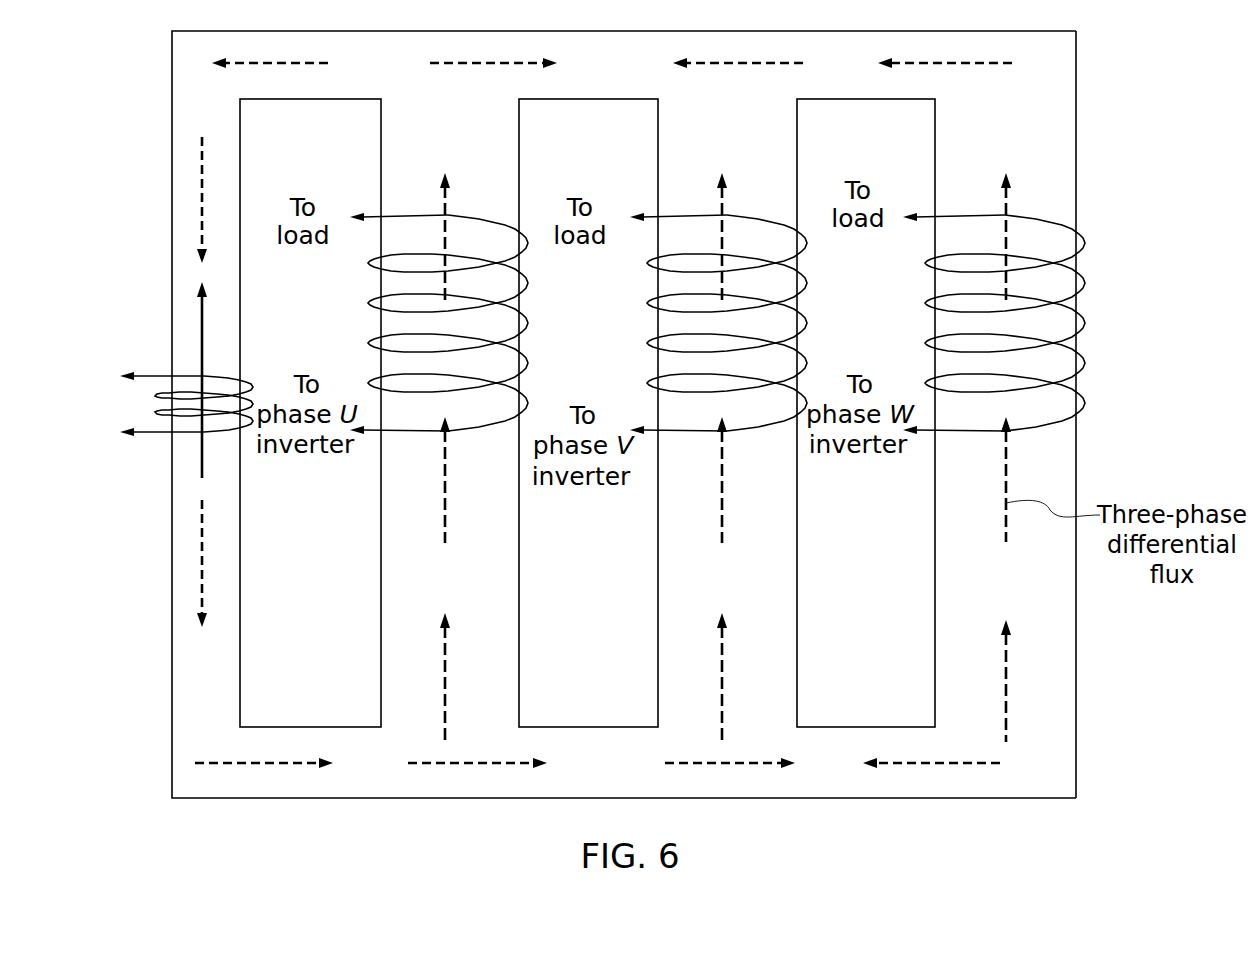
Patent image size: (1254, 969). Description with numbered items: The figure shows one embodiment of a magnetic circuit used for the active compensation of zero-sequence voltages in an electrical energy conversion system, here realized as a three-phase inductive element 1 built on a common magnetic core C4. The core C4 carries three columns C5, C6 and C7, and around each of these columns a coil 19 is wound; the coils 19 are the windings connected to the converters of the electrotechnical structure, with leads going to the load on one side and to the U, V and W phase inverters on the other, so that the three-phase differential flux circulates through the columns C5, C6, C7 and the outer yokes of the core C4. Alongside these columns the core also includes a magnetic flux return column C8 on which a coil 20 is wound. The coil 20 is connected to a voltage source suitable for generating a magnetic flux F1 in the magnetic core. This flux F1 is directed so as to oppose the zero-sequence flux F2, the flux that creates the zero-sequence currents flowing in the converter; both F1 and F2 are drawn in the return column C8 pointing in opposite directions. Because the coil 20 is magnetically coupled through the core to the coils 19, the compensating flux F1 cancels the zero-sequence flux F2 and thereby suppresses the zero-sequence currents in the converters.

The core (outer yoke) C4 is at (172, 128).
The column C7 is at (935, 600).
The magnetic flux return column C8 is at (240, 650).
The column C5 is at (519, 648).
The column C6 is at (798, 606).
The zero-sequence flux F2 is at (203, 167).
The magnetic flux F1 is at (203, 290).
The coil 19 is at (520, 238).
The reactor 1 is at (527, 412).
The coil 20 is at (157, 437).